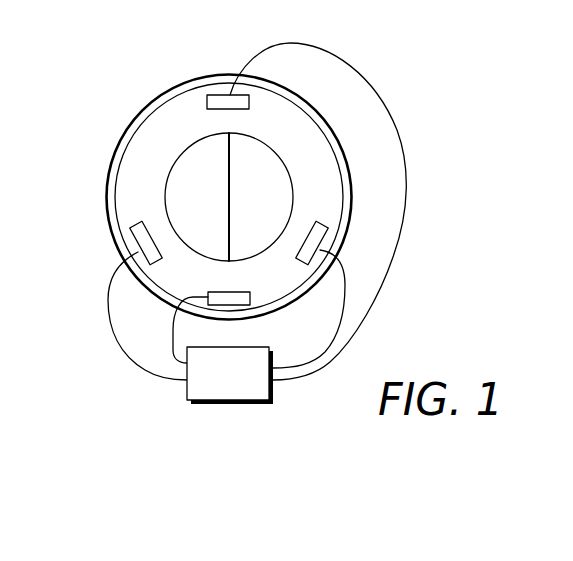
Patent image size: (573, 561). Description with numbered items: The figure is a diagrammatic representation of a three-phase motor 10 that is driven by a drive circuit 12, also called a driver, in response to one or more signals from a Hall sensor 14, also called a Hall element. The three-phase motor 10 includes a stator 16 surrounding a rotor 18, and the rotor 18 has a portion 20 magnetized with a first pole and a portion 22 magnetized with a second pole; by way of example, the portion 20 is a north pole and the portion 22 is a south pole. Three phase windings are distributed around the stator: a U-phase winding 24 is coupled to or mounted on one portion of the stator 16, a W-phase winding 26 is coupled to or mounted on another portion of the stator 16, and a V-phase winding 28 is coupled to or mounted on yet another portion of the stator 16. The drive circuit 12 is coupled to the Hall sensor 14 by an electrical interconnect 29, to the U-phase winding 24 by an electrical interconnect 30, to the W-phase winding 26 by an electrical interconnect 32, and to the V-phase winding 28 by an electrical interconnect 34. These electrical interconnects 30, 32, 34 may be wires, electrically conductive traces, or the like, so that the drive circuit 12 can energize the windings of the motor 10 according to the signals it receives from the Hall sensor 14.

The three-phase motor 10 is at (188, 58).
The drive circuit 12 is at (210, 404).
The Hall sensor 14 is at (233, 302).
The stator 16 is at (123, 132).
The rotor 18 is at (188, 143).
The portion magnetized with a first pole 20 is at (308, 155).
The portion magnetized with a second pole 22 is at (136, 180).
The U-phase winding 24 is at (140, 231).
The W-phase winding 26 is at (318, 222).
The V-phase winding 28 is at (249, 102).
The electrical interconnect 29 is at (173, 330).
The electrical interconnect 30 is at (122, 347).
The electrical interconnect 32 is at (327, 330).
The electrical interconnect 34 is at (383, 95).